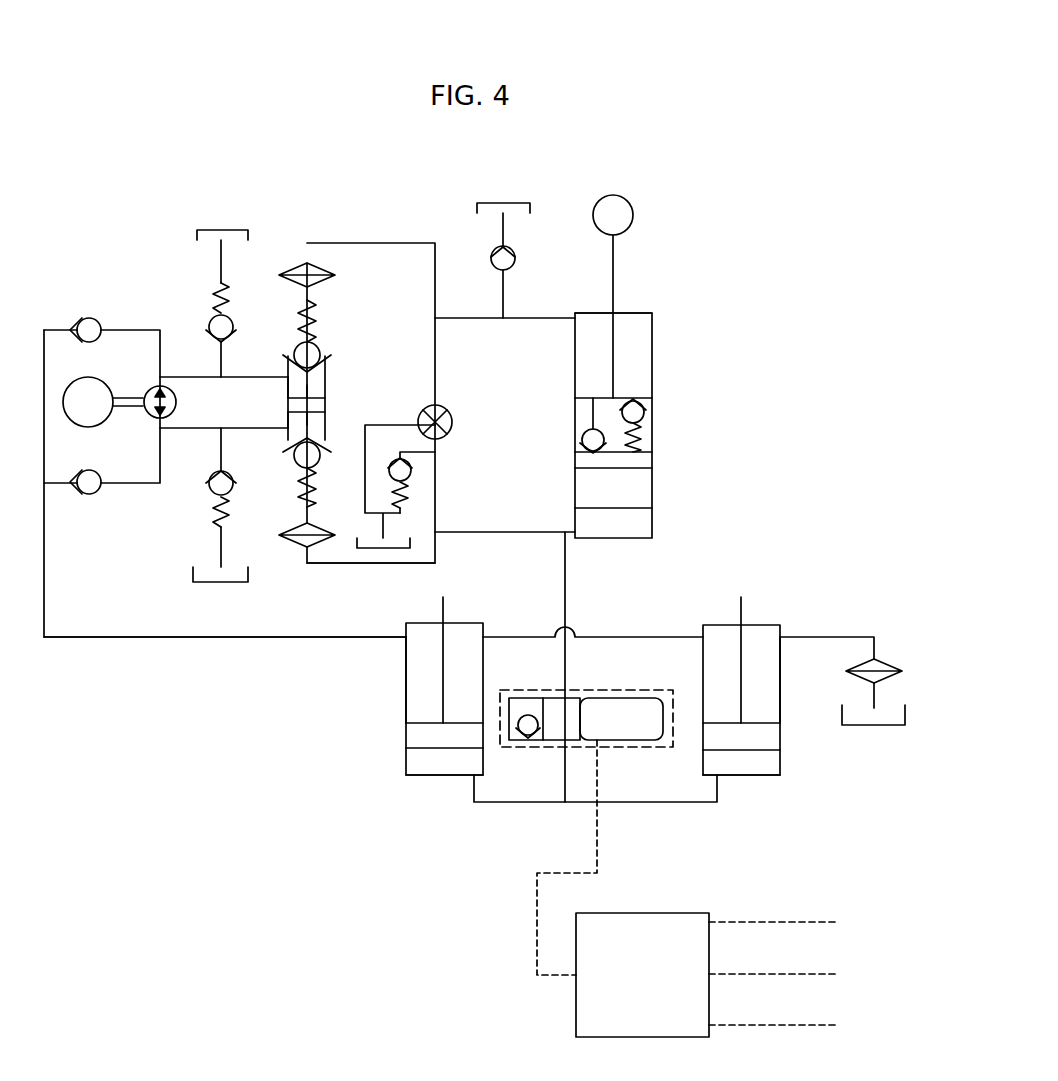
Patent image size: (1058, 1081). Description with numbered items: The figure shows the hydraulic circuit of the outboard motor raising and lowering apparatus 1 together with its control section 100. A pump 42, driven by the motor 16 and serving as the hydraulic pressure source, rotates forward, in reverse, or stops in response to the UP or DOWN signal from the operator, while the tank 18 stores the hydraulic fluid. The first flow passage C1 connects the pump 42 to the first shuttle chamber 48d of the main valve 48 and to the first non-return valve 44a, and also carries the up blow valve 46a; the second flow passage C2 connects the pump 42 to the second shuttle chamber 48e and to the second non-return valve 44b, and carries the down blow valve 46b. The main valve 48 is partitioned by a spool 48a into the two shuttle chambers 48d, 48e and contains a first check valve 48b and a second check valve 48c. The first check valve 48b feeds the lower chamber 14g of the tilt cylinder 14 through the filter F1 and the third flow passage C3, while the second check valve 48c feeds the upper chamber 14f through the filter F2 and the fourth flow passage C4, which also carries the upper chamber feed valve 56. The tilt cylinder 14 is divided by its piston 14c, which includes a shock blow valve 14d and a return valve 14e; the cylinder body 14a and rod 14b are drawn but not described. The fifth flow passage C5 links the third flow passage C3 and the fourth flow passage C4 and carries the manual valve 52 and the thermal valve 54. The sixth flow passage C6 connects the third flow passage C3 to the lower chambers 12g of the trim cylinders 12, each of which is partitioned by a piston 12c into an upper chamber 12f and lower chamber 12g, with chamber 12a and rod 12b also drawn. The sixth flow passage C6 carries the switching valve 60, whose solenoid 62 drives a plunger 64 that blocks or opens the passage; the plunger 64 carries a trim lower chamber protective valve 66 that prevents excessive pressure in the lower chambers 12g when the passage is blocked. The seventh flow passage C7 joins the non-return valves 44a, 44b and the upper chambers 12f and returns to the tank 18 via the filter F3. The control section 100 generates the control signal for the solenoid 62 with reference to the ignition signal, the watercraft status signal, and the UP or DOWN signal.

The outboard motor raising and lowering apparatus 1 is at (86, 176).
The trim cylinders 12 is at (400, 674).
The cylinder chamber 12a is at (405, 655).
The piston rod 12b is at (441, 698).
The piston 12c is at (408, 738).
The upper chamber 12f is at (464, 636).
The lower chamber 12g is at (408, 765).
The tilt cylinder 14 is at (664, 308).
The cylinder body 14a is at (654, 351).
The piston rod 14b is at (616, 260).
The piston 14c is at (577, 408).
The shock blow valve 14d is at (646, 410).
The return valve 14e is at (580, 440).
The upper chamber 14f is at (590, 320).
The lower chamber 14g is at (654, 522).
The motor 16 is at (88, 427).
The tank 18 is at (210, 229).
The pump 42 is at (150, 388).
The first non-return valve 44a is at (95, 496).
The second non-return valve 44b is at (93, 318).
The up blow valve 46a is at (232, 487).
The down blow valve 46b is at (233, 327).
The main valve 48 is at (332, 387).
The spool 48a is at (326, 404).
The first check valve 48b is at (320, 462).
The second check valve 48c is at (320, 349).
The first shuttle chamber 48d is at (288, 418).
The second shuttle chamber 48e is at (288, 390).
The manual valve 52 is at (452, 414).
The thermal valve 54 is at (412, 470).
The upper chamber feed valve 56 is at (517, 255).
The switching valve 60 is at (614, 690).
The solenoid 62 is at (640, 748).
The plunger 64 is at (542, 746).
The trim lower chamber protective valve 66 is at (516, 698).
The control section 100 is at (656, 912).
The first flow passage C1 is at (178, 432).
The second flow passage C2 is at (185, 376).
The third flow passage C3 is at (325, 565).
The fourth flow passage C4 is at (372, 242).
The fifth flow passage C5 is at (437, 346).
The sixth flow passage C6 is at (567, 588).
The seventh flow passage C7 is at (114, 639).
The filter F1 is at (297, 548).
The filter F2 is at (334, 275).
The filter F3 is at (888, 663).